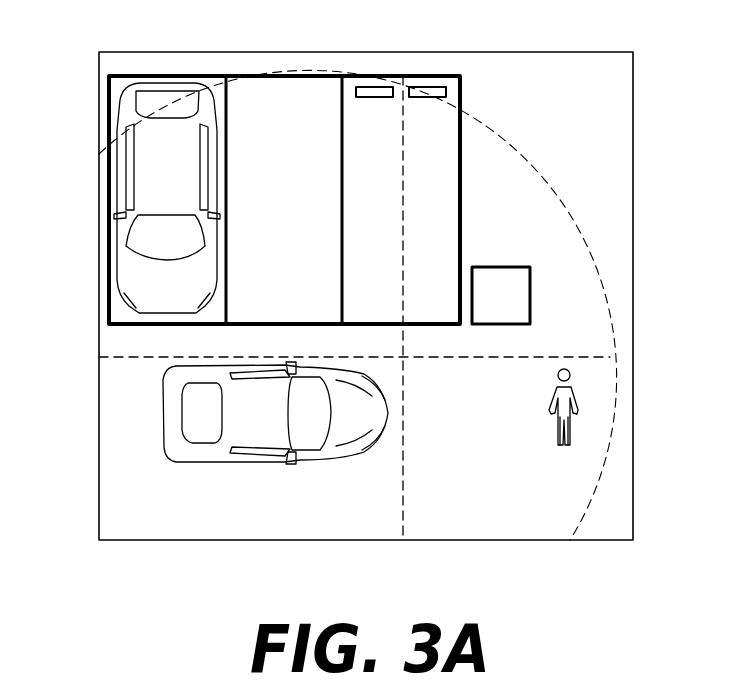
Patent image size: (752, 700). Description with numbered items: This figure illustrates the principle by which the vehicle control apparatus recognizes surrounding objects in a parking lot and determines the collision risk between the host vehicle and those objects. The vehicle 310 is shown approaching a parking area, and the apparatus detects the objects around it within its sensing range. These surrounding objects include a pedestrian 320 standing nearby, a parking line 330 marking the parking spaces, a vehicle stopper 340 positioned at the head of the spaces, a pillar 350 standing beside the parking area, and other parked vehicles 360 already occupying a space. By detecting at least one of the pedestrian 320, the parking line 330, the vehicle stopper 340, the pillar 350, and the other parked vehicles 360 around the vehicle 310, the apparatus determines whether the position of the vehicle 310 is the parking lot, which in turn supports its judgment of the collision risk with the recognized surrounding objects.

The vehicle 310 is at (165, 418).
The pedestrian 320 is at (580, 418).
The parking line 330 is at (109, 110).
The vehicle stopper 340 is at (436, 92).
The pillar 350 is at (530, 294).
The other parked vehicles 360 is at (120, 260).